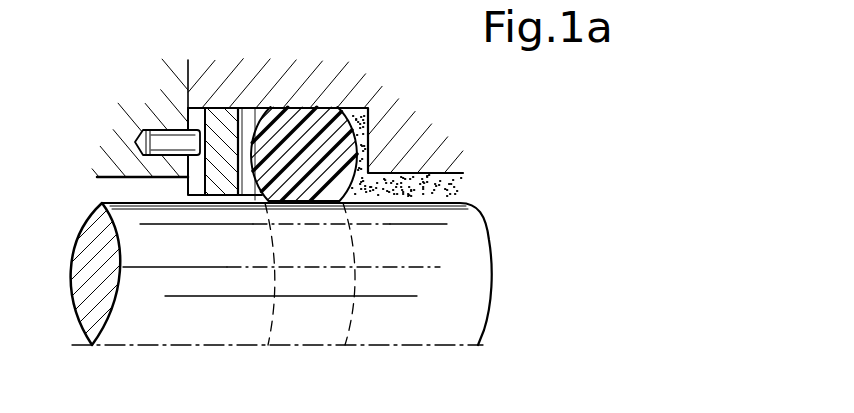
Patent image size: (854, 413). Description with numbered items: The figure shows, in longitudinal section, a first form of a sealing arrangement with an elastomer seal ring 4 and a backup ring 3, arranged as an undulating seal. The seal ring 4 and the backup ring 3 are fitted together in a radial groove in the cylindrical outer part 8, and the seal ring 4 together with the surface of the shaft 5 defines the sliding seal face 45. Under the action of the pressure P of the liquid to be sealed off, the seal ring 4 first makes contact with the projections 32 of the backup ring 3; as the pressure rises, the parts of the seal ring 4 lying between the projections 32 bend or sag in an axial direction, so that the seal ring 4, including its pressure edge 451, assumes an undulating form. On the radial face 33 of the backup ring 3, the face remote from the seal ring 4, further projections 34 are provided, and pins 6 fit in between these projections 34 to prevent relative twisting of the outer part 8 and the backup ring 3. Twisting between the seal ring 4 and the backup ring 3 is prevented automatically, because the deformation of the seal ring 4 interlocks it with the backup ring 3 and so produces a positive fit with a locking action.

The backup ring 3 is at (218, 118).
The projections 32 is at (247, 118).
The radial face 33 is at (207, 175).
The projections 34 is at (192, 118).
The elastomer seal ring 4 is at (300, 130).
The shaft 5 is at (457, 220).
The pins 6 is at (140, 136).
The cylindrical outer part 8 is at (340, 107).
The pressure P is at (390, 187).
The sliding seal face 45 is at (263, 198).
The pressure edge 451 is at (352, 257).